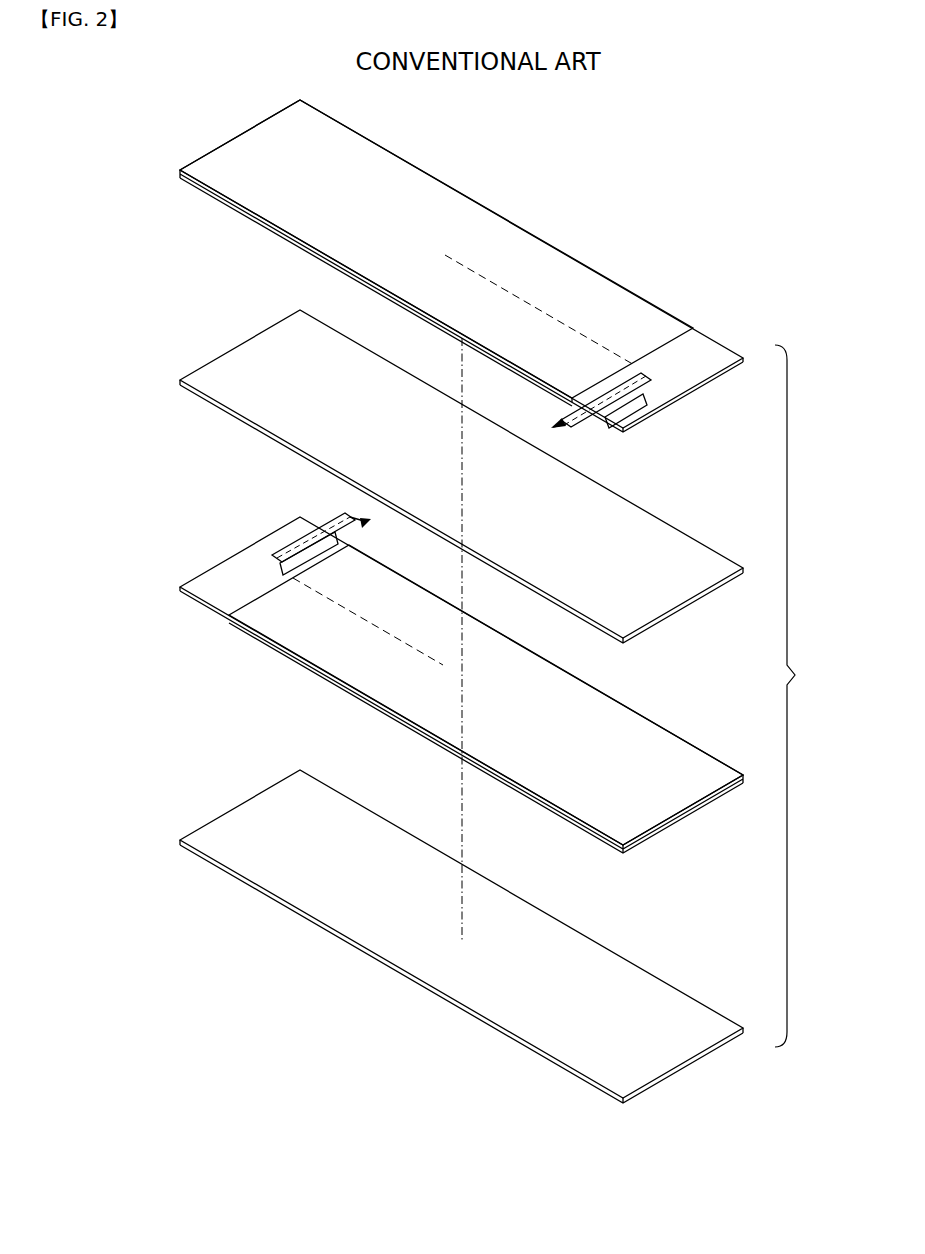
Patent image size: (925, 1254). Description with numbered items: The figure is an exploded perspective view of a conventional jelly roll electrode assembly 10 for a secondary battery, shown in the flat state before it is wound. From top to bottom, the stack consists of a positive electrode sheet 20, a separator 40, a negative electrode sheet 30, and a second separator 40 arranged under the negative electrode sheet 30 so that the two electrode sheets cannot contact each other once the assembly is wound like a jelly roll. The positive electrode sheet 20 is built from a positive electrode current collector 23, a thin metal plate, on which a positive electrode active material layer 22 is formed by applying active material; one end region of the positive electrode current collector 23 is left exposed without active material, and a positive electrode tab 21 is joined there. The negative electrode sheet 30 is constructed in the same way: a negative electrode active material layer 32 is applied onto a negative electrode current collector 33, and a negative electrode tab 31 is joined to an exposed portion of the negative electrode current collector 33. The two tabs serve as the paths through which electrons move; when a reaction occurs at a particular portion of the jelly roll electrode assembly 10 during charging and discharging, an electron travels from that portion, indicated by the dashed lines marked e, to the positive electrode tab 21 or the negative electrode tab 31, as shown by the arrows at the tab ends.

The jelly roll electrode assembly 10 is at (804, 696).
The positive electrode sheet 20 is at (471, 289).
The positive electrode tab 21 is at (588, 425).
The positive electrode active material layer 22 is at (643, 313).
The positive electrode current collector 23 is at (702, 350).
The negative electrode sheet 30 is at (437, 659).
The negative electrode tab 31 is at (336, 514).
The negative electrode active material layer 32 is at (275, 624).
The negative electrode current collector 33 is at (220, 592).
The separator 40 is at (245, 358).